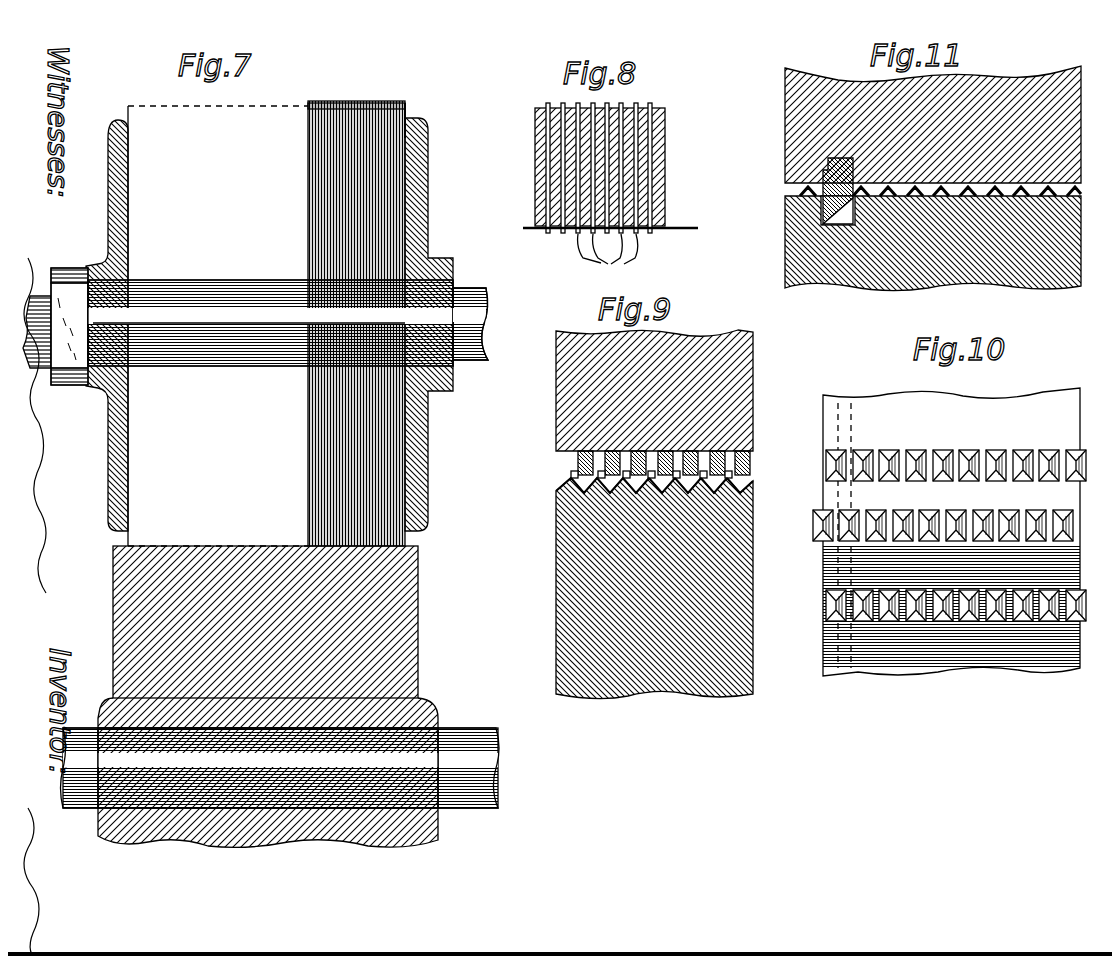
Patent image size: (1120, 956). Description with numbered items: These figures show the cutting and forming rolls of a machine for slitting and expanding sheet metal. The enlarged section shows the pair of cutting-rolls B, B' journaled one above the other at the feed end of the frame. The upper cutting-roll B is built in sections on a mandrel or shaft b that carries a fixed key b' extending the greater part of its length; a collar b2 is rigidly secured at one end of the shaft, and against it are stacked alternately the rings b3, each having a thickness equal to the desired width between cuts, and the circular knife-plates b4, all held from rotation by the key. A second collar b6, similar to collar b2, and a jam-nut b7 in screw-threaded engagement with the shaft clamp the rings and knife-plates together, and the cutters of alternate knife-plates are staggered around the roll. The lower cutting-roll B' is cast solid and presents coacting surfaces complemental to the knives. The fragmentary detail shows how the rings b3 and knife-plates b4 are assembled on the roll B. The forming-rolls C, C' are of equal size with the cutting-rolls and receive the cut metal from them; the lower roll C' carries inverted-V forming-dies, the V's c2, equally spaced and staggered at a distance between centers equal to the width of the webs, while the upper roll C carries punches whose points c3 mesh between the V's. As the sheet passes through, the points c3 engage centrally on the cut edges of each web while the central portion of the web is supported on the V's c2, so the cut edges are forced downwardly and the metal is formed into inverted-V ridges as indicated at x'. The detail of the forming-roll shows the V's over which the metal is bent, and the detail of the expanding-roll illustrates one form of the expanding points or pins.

In FIG. 7, the cutting-roll B is at (356, 298).
In FIG. 8, the cutting-roll B is at (616, 167).
In FIG. 11, the cutting-roll B is at (933, 178).
In FIG. 7, the lower cutting-roll B' is at (286, 696).
In FIG. 7, the mandrel or shaft b is at (305, 323).
In FIG. 7, the fixed key b' is at (260, 310).
In FIG. 7, the collar b2 is at (418, 190).
In FIG. 7, the rings b3 is at (398, 100).
In FIG. 8, the rings b3 is at (648, 128).
In FIG. 7, the knife-plates b4 is at (390, 95).
In FIG. 8, the knife-plates b4 is at (610, 254).
In FIG. 7, the collar b6 is at (100, 190).
In FIG. 7, the jam-nut b7 is at (56, 270).
In FIG. 9, the forming-roll C is at (679, 390).
In FIG. 10, the forming-roll C is at (951, 532).
In FIG. 9, the lower forming-roll C' is at (680, 588).
In FIG. 9, the V's c2 is at (696, 472).
In FIG. 10, the V's c2 is at (1092, 454).
In FIG. 9, the points c3 is at (745, 468).
In FIG. 9, the formed metal portion x' is at (677, 443).